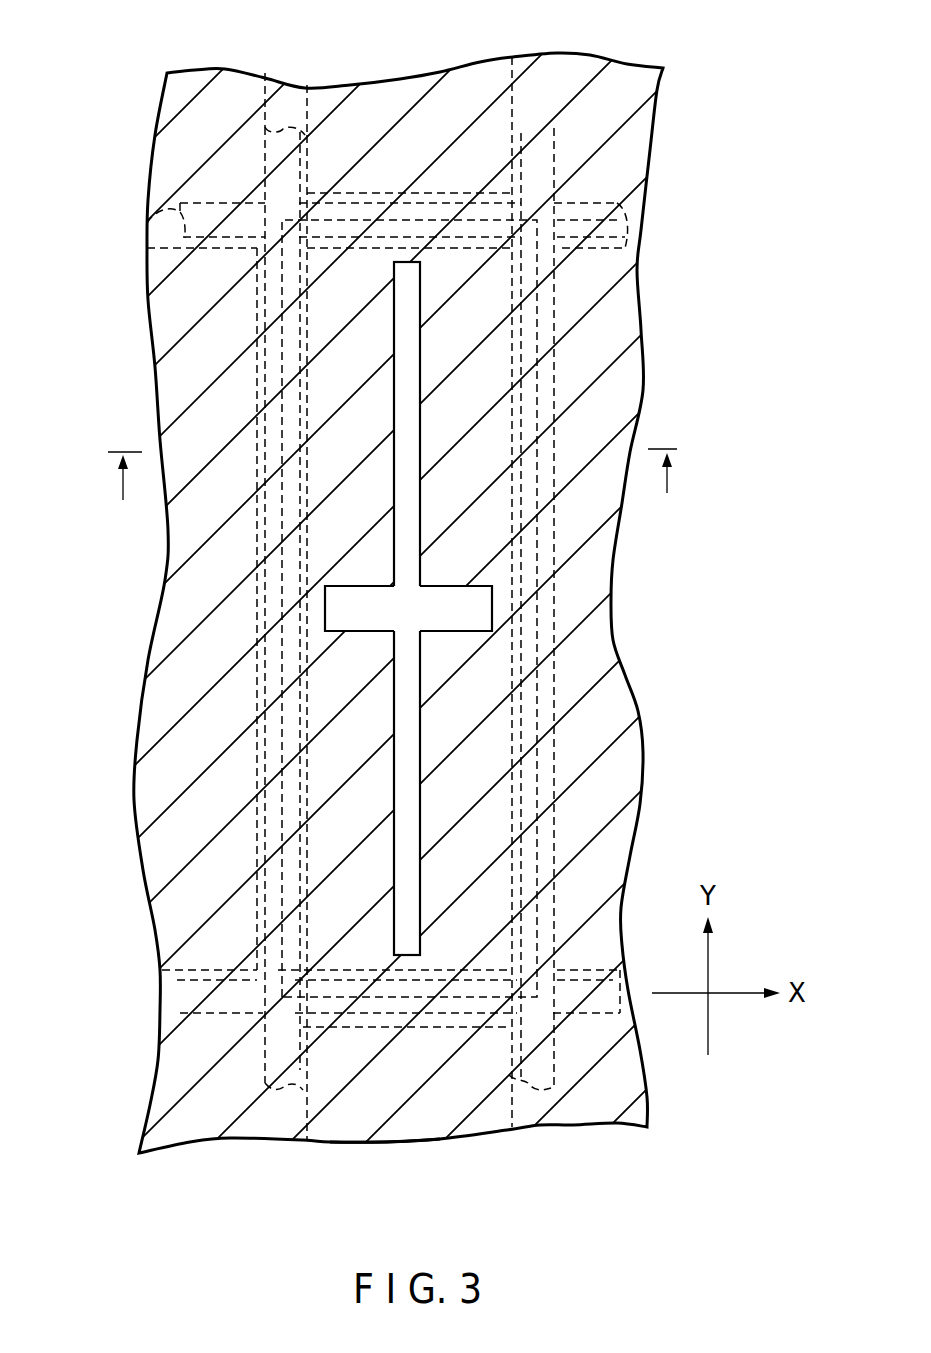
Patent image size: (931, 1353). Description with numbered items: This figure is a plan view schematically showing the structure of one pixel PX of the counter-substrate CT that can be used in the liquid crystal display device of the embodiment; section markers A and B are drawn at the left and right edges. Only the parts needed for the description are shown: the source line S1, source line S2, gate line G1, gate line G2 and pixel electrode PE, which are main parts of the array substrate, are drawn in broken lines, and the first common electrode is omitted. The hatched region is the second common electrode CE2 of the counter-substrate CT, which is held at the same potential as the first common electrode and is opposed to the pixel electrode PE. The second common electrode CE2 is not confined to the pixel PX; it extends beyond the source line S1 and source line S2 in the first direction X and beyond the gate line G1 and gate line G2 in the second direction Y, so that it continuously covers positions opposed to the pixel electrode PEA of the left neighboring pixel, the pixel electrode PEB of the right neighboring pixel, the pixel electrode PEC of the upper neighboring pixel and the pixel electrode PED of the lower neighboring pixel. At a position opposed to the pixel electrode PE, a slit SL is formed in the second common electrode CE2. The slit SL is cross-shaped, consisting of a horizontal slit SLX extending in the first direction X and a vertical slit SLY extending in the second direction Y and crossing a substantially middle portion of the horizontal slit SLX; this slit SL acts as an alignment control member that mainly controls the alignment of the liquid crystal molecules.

The counter-substrate CT is at (700, 136).
The second common electrode CE2 is at (385, 1142).
The source line S1 is at (265, 80).
The source line S2 is at (512, 130).
The gate line G1 is at (178, 203).
The gate line G2 is at (180, 1018).
The pixel electrode PE is at (527, 338).
The pixel PX is at (545, 213).
The pixel electrode PEA is at (158, 233).
The pixel electrode PEB is at (634, 236).
The pixel electrode PEC is at (292, 84).
The pixel electrode PED is at (523, 1115).
The slit SL is at (386, 608).
The horizontal slit SLX is at (385, 621).
The vertical slit SLY is at (407, 608).
The section line A is at (125, 494).
The section line B is at (662, 491).